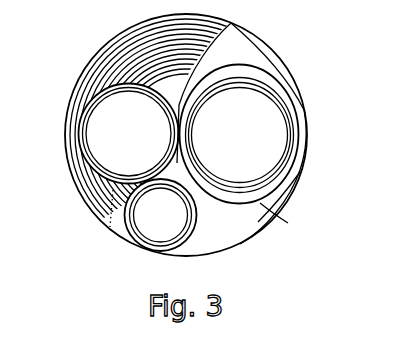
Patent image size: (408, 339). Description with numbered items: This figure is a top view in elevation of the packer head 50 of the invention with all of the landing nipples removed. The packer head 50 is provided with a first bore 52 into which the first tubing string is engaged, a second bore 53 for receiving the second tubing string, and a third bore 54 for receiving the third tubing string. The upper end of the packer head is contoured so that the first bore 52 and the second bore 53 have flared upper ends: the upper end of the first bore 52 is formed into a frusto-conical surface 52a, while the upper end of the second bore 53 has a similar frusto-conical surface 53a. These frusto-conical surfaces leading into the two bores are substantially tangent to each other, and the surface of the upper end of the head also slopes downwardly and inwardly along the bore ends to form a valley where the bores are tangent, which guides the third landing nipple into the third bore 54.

The packer head 50 is at (279, 224).
The first bore 52 is at (284, 118).
The frusto-conical surface 52a is at (232, 48).
The second bore 53 is at (90, 123).
The frusto-conical surface 53a is at (106, 57).
The third bore 54 is at (143, 224).